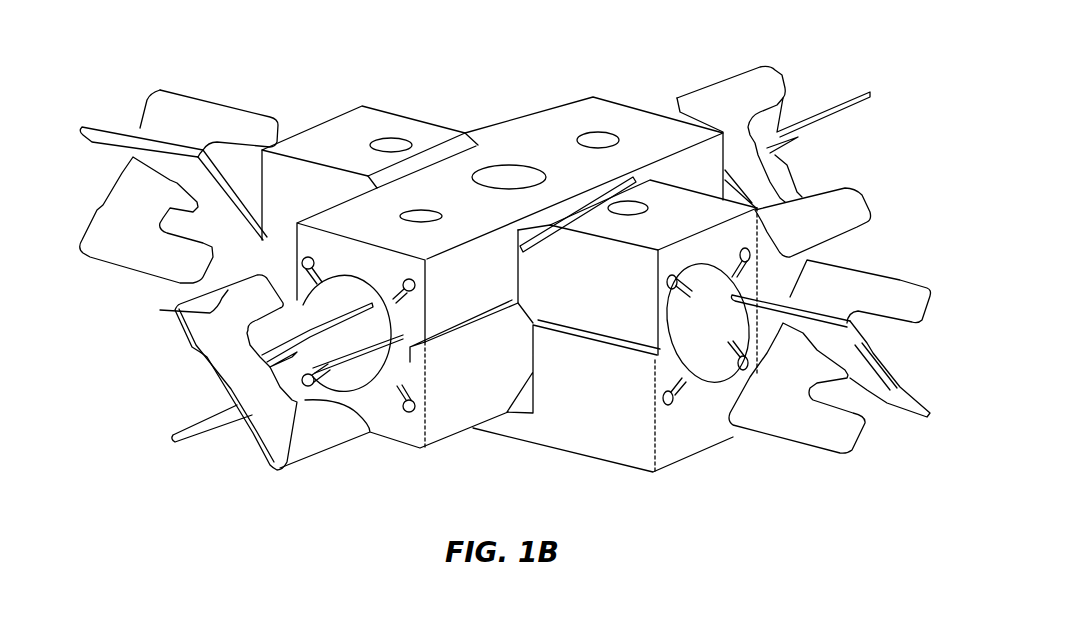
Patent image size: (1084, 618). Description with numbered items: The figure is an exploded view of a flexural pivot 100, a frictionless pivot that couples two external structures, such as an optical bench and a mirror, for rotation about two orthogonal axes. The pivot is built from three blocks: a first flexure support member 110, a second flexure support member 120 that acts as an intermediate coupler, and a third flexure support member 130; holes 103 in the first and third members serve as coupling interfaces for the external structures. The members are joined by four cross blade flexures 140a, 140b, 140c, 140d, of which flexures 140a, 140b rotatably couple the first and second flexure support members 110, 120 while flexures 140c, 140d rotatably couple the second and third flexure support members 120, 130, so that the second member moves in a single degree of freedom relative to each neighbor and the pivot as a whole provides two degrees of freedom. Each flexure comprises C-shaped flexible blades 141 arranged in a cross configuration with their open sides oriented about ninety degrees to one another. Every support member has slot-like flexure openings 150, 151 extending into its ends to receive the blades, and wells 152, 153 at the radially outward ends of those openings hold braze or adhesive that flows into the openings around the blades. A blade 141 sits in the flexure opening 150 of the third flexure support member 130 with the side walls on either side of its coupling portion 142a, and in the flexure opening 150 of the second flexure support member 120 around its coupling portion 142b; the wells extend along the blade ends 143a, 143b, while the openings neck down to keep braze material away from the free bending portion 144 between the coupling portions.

The flexural pivot 100 is at (455, 44).
The holes 103 is at (601, 130).
The first flexure support member 110 is at (564, 461).
The second flexure support member 120 is at (445, 114).
The third flexure support member 130 is at (565, 100).
The flexure 140a is at (889, 433).
The flexure 140b is at (131, 99).
The flexure 140c is at (229, 479).
The flexure 140d is at (831, 69).
The flexible blade 141 is at (205, 100).
The coupling portion 142a is at (217, 310).
The coupling portion 142b is at (305, 435).
The end of flexible blade 143a is at (205, 289).
The end of flexible blade 143b is at (323, 457).
The bending portion 144 is at (247, 375).
The flexure opening 150 is at (322, 268).
The flexure opening 151 is at (394, 286).
The well 152 is at (305, 246).
The well 153 is at (416, 274).